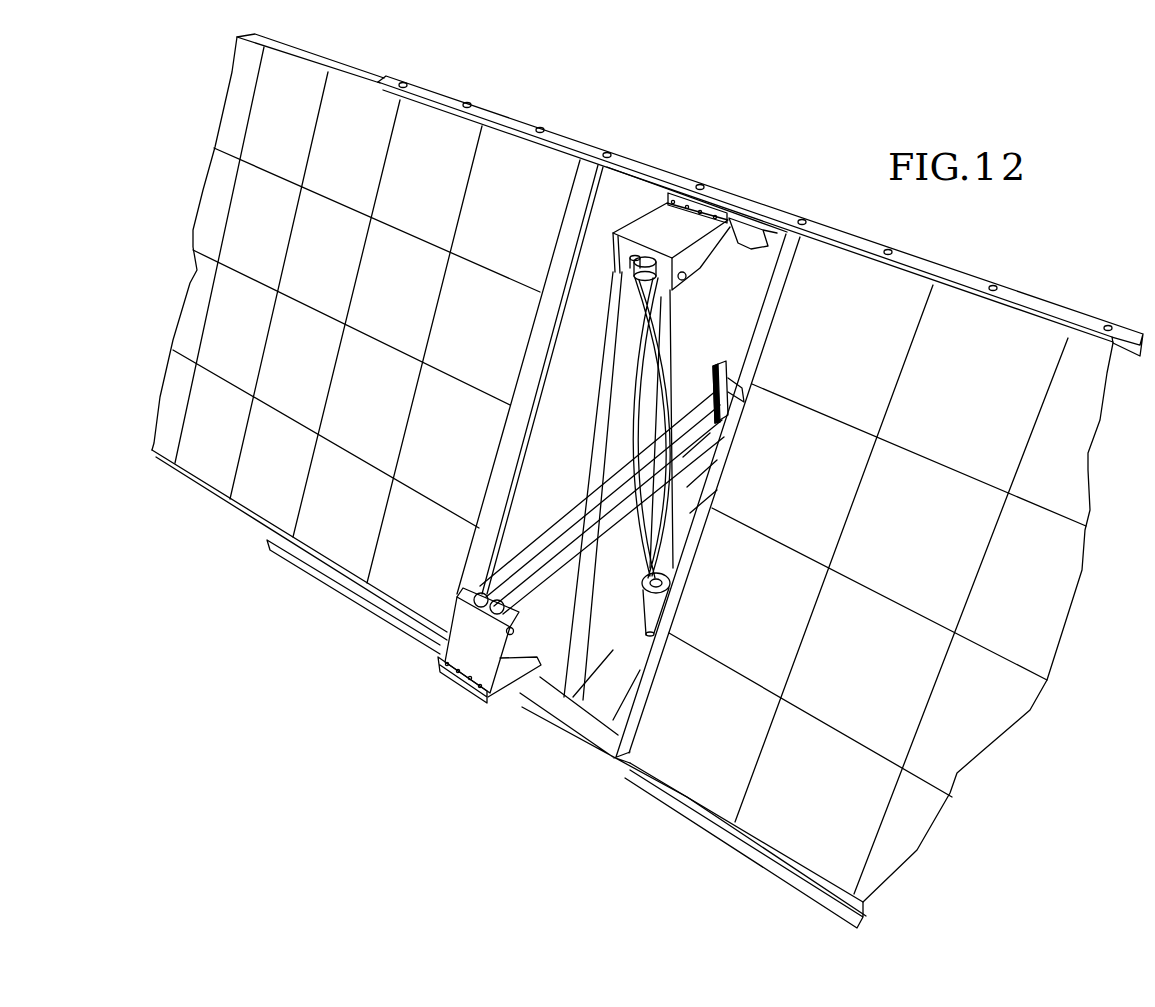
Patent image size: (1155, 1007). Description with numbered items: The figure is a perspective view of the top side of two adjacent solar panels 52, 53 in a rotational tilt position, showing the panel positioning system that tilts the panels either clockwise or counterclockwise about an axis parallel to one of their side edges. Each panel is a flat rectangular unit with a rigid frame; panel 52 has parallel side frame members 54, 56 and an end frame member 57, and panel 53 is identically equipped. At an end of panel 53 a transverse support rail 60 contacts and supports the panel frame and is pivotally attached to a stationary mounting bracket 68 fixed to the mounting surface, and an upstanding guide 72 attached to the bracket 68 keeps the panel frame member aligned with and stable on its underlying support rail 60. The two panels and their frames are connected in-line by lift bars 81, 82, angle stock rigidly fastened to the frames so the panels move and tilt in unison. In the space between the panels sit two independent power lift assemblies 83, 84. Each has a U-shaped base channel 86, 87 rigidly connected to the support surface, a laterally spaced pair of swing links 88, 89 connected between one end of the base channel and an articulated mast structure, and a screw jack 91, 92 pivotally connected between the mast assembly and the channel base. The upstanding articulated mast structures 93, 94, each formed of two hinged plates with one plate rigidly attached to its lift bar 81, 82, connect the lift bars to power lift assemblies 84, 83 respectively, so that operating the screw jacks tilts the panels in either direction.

The solar panel 52 is at (910, 544).
The solar panel 53 is at (333, 296).
The side frame member 54 is at (826, 232).
The side frame member 56 is at (687, 798).
The end frame member 57 is at (768, 328).
The support rail 60 is at (567, 520).
The stationary mounting bracket 68 is at (730, 368).
The upstanding guide 72 is at (730, 400).
The lift bar 81 is at (908, 262).
The lift bar 82 is at (582, 735).
The power lift assembly 83 is at (547, 638).
The power lift assembly 84 is at (684, 533).
The U-shaped base channel 86 is at (613, 600).
The U-shaped base channel 87 is at (637, 667).
The swing links 88 is at (710, 493).
The swing links 89 is at (643, 373).
The screw jack 91 is at (540, 578).
The screw jack 92 is at (683, 578).
The articulated mast structure 93 is at (721, 259).
The articulated mast structure 94 is at (457, 706).